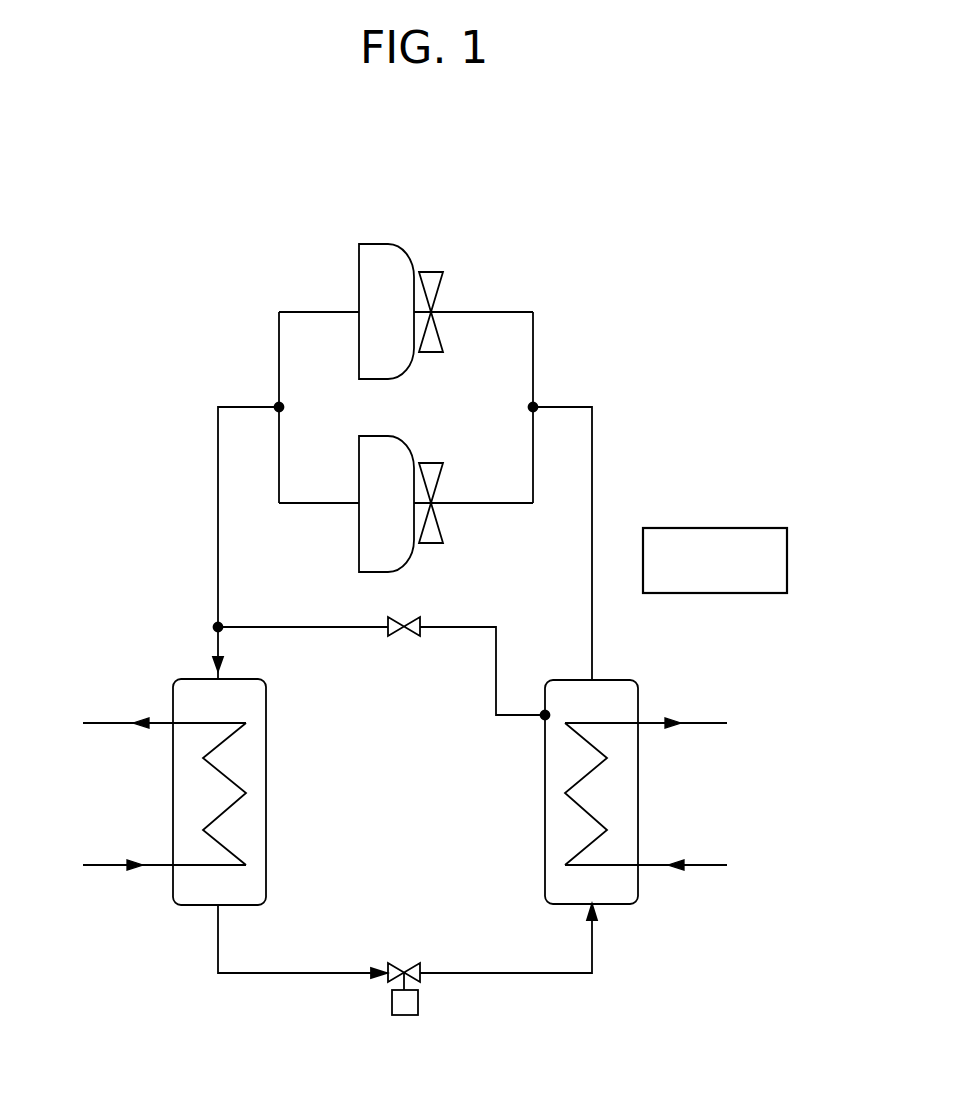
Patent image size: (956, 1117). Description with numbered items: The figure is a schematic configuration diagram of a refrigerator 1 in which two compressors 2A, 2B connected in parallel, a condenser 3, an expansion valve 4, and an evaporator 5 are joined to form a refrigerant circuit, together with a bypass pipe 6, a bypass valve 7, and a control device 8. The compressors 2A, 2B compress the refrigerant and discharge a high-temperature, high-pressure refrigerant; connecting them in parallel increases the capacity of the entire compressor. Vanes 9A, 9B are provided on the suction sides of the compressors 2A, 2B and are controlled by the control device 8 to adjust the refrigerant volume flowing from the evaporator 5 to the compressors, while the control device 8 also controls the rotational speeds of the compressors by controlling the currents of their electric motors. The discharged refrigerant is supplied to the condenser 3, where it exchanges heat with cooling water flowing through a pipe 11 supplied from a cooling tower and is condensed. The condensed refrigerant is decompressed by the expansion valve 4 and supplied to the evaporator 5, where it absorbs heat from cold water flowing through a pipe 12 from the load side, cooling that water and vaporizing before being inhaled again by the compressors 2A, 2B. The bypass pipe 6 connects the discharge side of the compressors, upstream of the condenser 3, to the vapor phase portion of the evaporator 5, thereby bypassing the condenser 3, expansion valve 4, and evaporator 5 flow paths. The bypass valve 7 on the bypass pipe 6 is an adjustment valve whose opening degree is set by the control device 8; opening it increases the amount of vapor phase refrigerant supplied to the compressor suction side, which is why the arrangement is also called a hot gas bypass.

The refrigerator 1 is at (647, 205).
The compressor 2A is at (372, 244).
The compressor 2B is at (369, 436).
The condenser 3 is at (266, 703).
The expansion valve 4 is at (407, 963).
The evaporator 5 is at (615, 680).
The bypass pipe 6 is at (284, 627).
The bypass valve 7 is at (413, 625).
The control device 8 is at (721, 528).
The vane 9A is at (430, 272).
The vane 9B is at (432, 463).
The pipe 11 is at (103, 721).
The pipe 12 is at (708, 721).